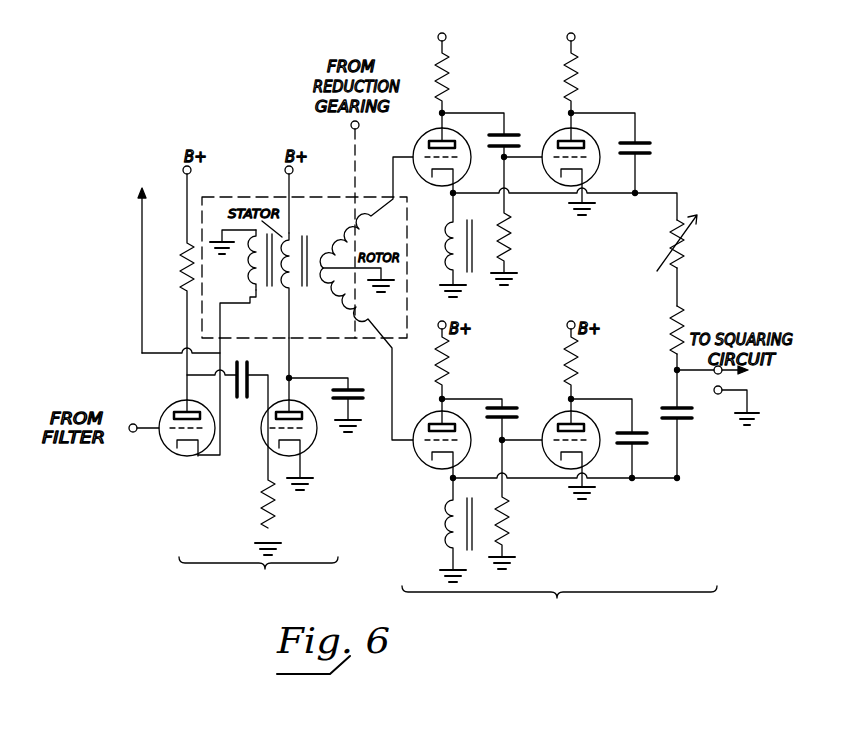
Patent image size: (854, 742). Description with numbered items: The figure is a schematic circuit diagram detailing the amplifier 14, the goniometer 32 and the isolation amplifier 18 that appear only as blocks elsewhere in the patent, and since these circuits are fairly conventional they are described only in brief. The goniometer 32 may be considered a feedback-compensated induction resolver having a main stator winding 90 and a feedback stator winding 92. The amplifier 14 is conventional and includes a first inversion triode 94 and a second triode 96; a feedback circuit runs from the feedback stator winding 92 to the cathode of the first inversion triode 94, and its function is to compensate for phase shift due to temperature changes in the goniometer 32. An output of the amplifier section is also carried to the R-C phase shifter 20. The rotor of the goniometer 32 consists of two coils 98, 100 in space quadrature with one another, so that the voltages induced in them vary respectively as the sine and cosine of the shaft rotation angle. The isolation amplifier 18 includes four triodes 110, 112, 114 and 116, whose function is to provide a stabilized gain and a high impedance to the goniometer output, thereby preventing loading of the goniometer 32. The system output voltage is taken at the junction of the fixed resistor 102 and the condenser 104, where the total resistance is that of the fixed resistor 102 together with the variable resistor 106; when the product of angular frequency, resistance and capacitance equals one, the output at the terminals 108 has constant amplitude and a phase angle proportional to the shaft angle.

The amplifier 14 is at (258, 577).
The isolation amplifier 18 is at (559, 605).
The R-C phase shifter 20 is at (100, 249).
The goniometer 32 is at (258, 197).
The main stator winding 90 is at (298, 272).
The feedback stator winding 92 is at (246, 272).
The first inversion triode 94 is at (188, 458).
The second triode 96 is at (307, 451).
The rotor coil 98 is at (345, 231).
The rotor coil 100 is at (345, 319).
The fixed resistor 102 is at (668, 337).
The condenser 104 is at (667, 400).
The variable resistor 106 is at (671, 247).
The output terminals 108 is at (715, 388).
The triode 110 is at (452, 130).
The triode 112 is at (581, 130).
The triode 114 is at (452, 413).
The triode 116 is at (582, 413).